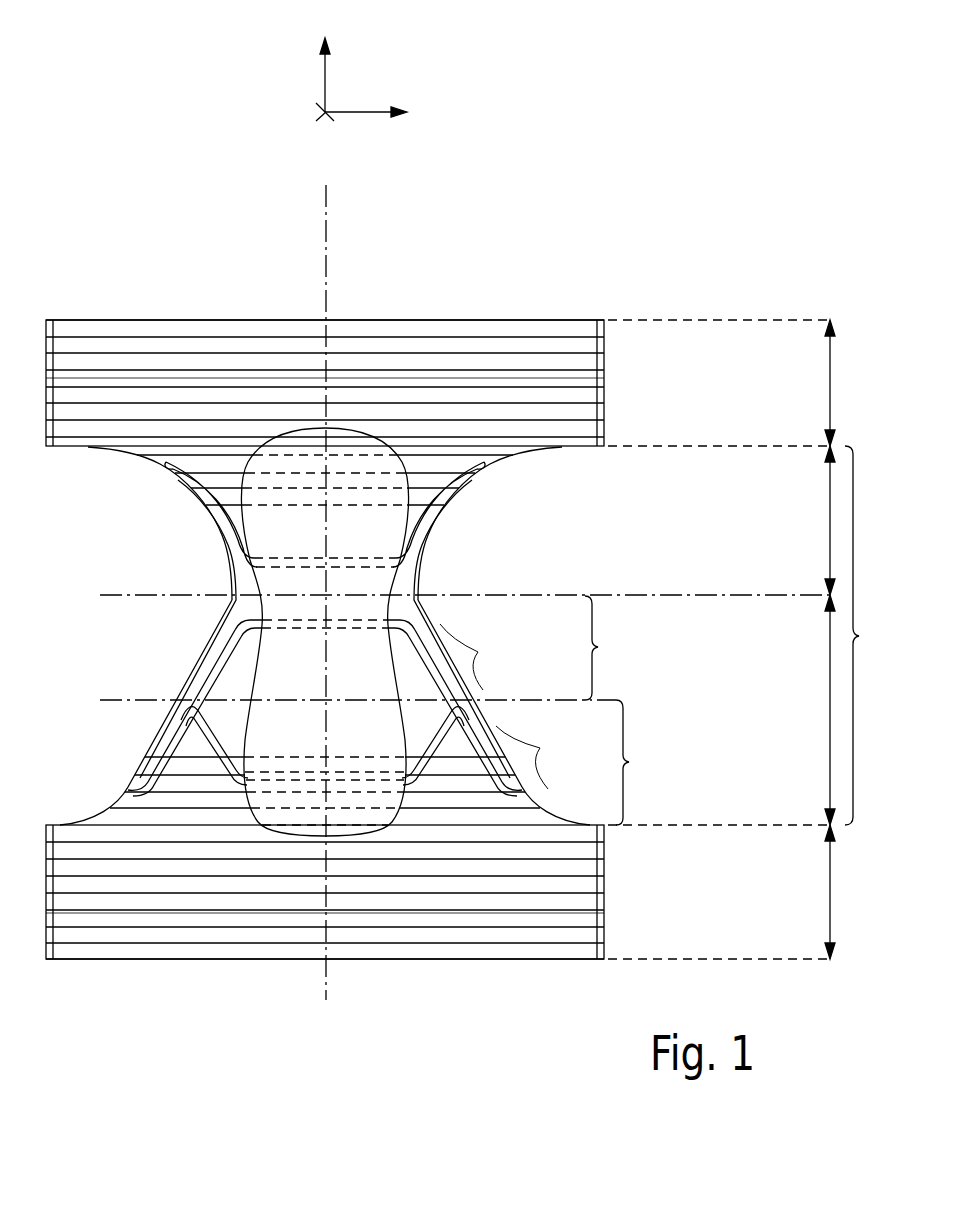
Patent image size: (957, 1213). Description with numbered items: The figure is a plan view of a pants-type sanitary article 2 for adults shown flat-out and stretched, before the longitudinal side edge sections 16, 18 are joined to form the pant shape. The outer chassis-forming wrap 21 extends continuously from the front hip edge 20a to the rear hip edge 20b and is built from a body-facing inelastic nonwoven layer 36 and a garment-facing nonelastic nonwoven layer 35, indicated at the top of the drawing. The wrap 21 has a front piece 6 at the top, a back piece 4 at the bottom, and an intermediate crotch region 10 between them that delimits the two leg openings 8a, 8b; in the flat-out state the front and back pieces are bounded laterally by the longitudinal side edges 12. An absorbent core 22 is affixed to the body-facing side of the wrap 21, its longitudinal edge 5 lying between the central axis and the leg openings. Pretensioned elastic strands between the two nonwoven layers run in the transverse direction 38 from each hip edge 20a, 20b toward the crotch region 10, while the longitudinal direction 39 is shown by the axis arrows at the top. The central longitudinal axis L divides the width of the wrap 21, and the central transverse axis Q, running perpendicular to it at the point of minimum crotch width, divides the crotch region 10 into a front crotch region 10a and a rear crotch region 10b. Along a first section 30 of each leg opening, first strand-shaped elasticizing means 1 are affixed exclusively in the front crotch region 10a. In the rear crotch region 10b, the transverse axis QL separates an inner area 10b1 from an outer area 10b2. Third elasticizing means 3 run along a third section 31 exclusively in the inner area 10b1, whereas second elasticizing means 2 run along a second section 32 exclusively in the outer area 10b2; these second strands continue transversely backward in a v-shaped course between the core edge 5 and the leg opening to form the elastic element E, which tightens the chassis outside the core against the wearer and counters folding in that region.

The first strand-shaped elasticizing means 1 is at (427, 518).
The sanitary article 2 is at (325, 508).
The third strand-shaped elasticizing means 3 is at (425, 640).
The back piece 4 is at (448, 892).
The longitudinal edge of the absorbent core 5 is at (410, 742).
The front piece 6 is at (604, 426).
The leg opening 8a is at (564, 510).
The leg opening 8b is at (158, 529).
The crotch region 10 is at (872, 635).
The front crotch region 10a is at (811, 520).
The rear crotch region 10b is at (811, 710).
The inner area of the rear crotch region 10b1 is at (619, 648).
The outer area of the rear crotch region 10b2 is at (641, 762).
The longitudinal side edge 12 is at (604, 340).
The longitudinal side edge section 16 is at (604, 913).
The longitudinal side edge section 18 is at (604, 377).
The front hip edge 20a is at (487, 318).
The rear hip edge 20b is at (487, 963).
The outer chassis-forming wrap 21 is at (108, 433).
The absorbent core 22 is at (278, 660).
The first section 30 is at (500, 464).
The third section 31 is at (473, 657).
The second section 32 is at (532, 757).
The garment-facing nonwoven layer 35 is at (190, 382).
The body-facing nonwoven layer 36 is at (118, 382).
The transverse direction 38 is at (358, 112).
The longitudinal direction 39 is at (325, 78).
The elastic element E is at (447, 737).
The central longitudinal axis L is at (327, 235).
The central transverse axis Q is at (530, 594).
The transverse axis QL is at (552, 700).